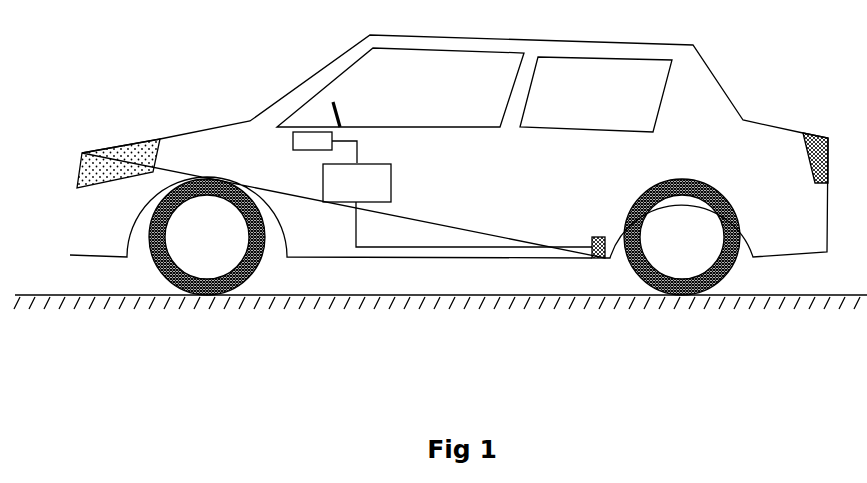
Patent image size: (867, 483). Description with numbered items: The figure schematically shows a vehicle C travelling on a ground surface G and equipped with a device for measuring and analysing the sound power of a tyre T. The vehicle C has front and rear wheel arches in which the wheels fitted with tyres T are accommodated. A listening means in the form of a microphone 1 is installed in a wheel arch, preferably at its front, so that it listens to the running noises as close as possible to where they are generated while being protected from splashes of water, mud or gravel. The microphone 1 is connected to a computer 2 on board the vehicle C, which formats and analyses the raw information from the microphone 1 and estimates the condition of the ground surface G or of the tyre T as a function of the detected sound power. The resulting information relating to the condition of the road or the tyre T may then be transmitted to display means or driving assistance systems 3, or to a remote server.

The microphone 1 is at (605, 258).
The computer 2 is at (343, 188).
The driving assistance systems 3 is at (307, 140).
The vehicle C is at (710, 100).
The ground surface G is at (62, 295).
The tyre T is at (713, 292).